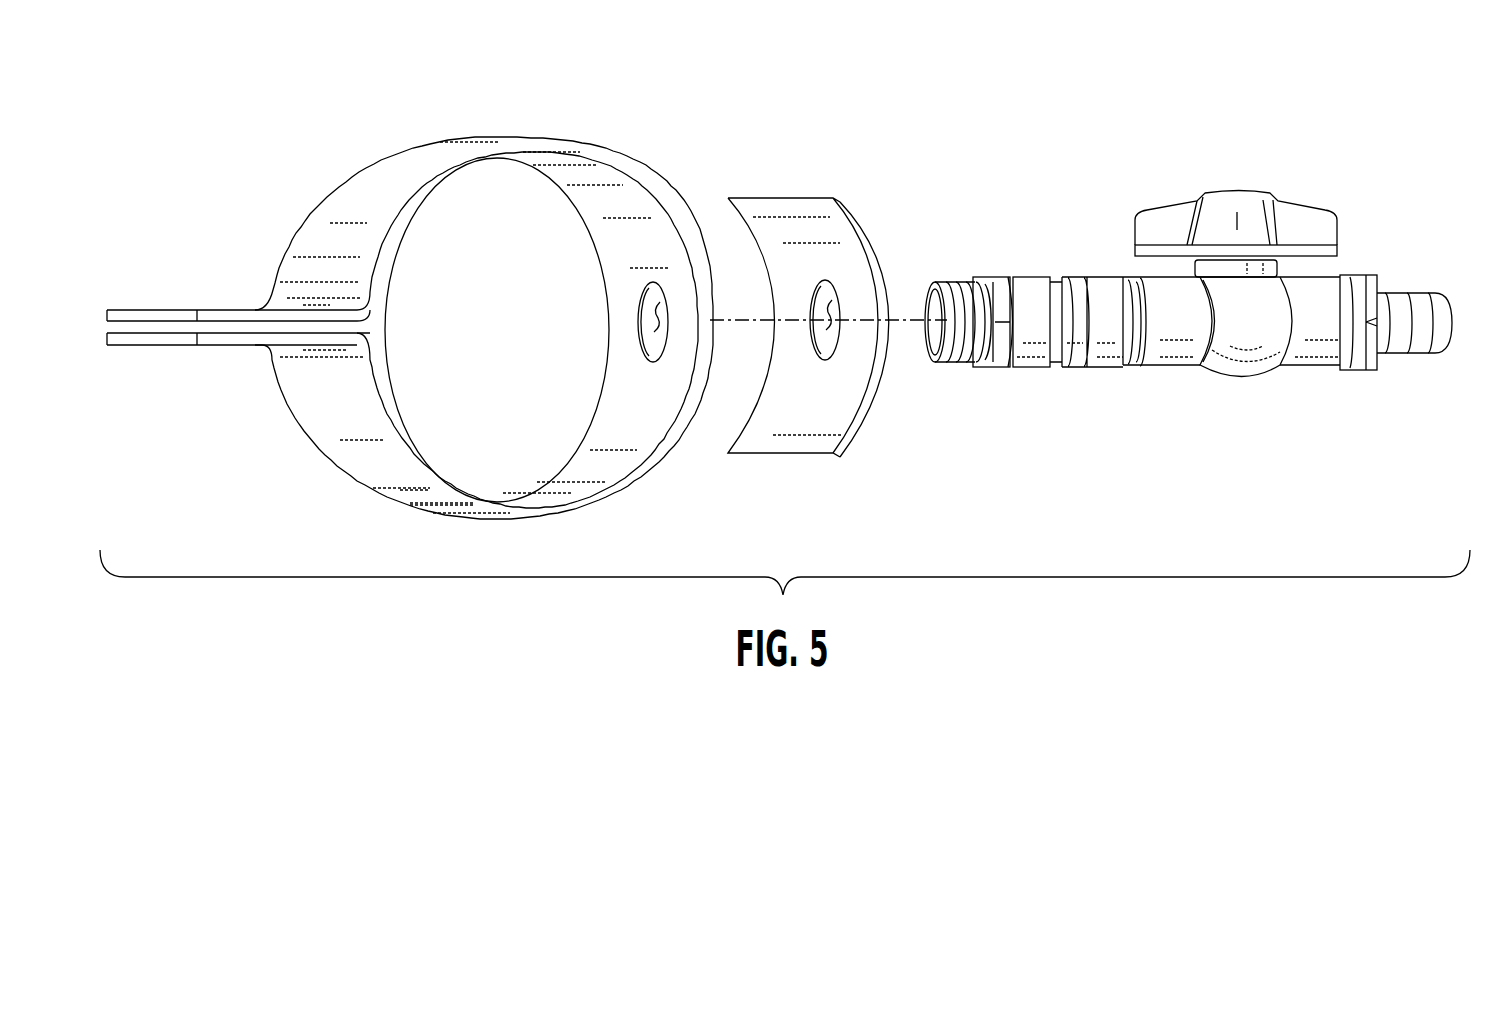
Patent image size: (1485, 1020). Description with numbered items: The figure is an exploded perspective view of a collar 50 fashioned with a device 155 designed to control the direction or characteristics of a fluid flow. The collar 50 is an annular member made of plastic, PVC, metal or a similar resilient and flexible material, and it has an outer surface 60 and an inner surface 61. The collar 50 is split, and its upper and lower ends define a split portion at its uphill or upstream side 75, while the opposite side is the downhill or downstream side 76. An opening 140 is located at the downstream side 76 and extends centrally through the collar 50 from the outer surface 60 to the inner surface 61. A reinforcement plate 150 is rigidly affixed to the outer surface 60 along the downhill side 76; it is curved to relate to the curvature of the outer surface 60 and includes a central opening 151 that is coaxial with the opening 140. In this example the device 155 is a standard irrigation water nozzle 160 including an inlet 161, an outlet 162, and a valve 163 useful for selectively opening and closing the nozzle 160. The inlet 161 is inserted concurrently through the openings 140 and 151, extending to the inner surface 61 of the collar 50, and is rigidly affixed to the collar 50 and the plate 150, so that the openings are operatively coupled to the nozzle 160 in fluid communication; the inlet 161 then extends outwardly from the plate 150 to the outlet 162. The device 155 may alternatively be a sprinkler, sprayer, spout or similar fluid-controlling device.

The collar 50 is at (517, 321).
The outer surface 60 is at (407, 165).
The inner surface 61 is at (608, 467).
The uphill side 75 is at (310, 292).
The downhill side 76 is at (713, 283).
The opening 140 is at (658, 325).
The reinforcement plate 150 is at (842, 350).
The central opening 151 is at (833, 320).
The device 155 is at (1188, 306).
The irrigation water nozzle 160 is at (1103, 367).
The inlet 161 is at (963, 367).
The outlet 162 is at (1433, 307).
The valve 163 is at (1253, 210).